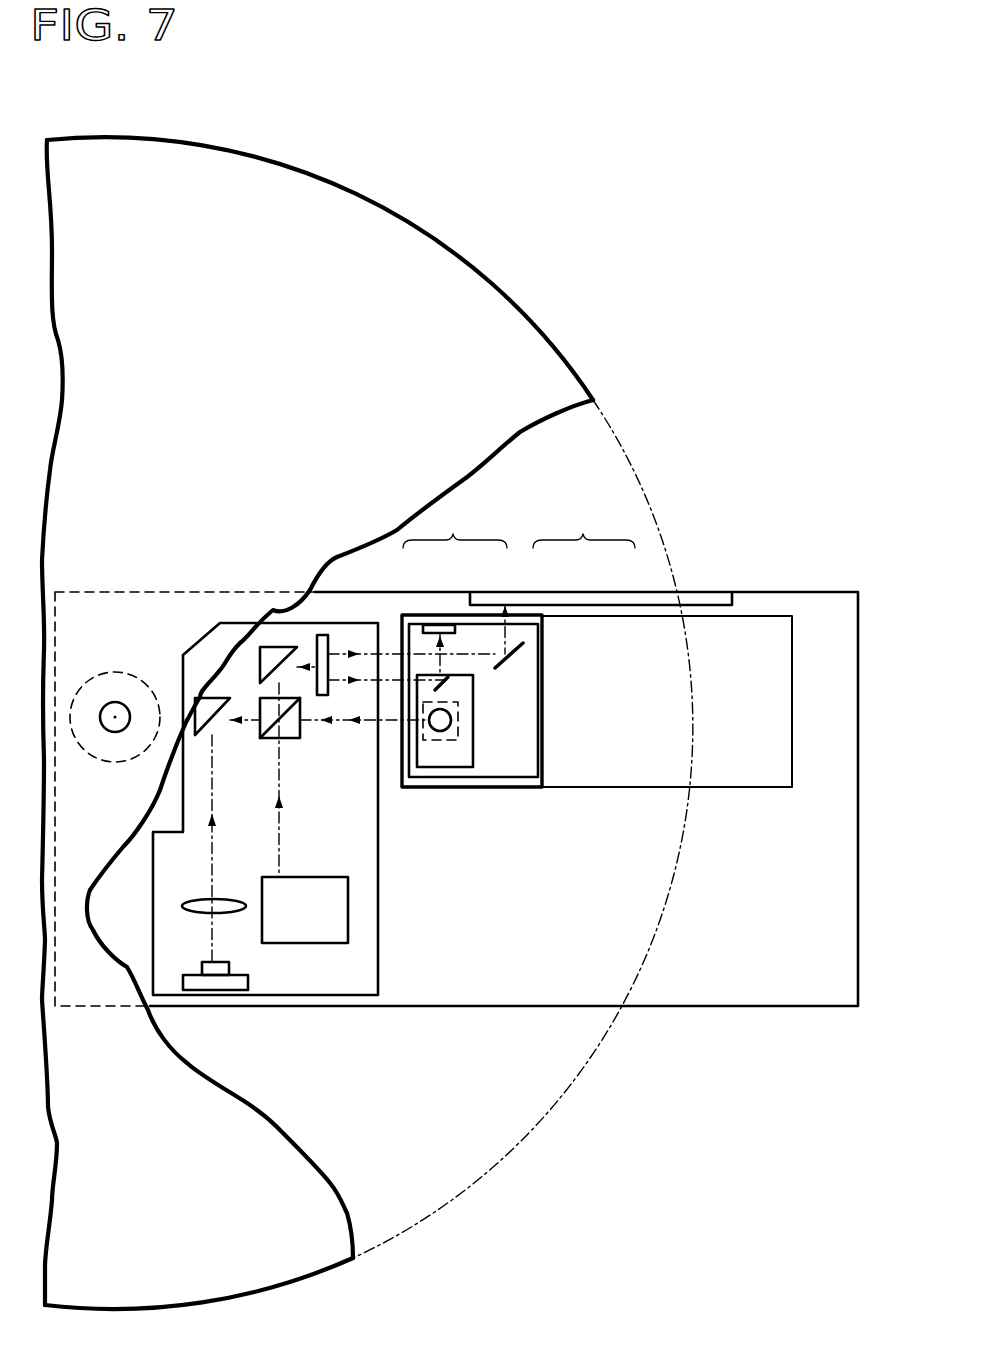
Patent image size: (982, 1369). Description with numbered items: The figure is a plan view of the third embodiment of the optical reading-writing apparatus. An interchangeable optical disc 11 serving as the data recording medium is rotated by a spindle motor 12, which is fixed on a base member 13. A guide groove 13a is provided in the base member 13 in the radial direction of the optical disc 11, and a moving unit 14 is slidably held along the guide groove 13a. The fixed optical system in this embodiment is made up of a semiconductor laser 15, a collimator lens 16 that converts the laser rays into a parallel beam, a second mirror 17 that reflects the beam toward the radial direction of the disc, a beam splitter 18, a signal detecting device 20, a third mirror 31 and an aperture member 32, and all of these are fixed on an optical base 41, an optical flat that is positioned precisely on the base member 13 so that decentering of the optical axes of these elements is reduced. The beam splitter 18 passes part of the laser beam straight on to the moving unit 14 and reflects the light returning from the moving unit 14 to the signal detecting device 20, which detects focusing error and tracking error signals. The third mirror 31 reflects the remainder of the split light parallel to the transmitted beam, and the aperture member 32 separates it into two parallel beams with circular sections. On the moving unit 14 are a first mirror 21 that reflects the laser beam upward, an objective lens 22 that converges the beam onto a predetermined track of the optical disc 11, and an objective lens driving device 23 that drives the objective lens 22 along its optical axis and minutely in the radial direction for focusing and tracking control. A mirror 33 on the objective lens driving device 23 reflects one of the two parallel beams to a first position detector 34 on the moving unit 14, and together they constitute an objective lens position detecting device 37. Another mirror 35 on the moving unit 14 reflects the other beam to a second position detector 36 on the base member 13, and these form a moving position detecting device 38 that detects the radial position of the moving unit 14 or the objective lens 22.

The optical disc 11 is at (511, 318).
The spindle motor 12 is at (112, 673).
The base member 13 is at (827, 603).
The guide groove 13a is at (758, 623).
The moving unit 14 is at (522, 767).
The semiconductor laser 15 is at (210, 983).
The collimator lens 16 is at (233, 914).
The second mirror 17 is at (208, 697).
The beam splitter 18 is at (259, 700).
The signal detecting device 20 is at (315, 941).
The first mirror 21 is at (445, 730).
The objective lens 22 is at (432, 732).
The objective lens driving device 23 is at (462, 753).
The third mirror 31 is at (277, 646).
The aperture member 32 is at (323, 634).
The mirror 33 is at (453, 682).
The first position detector 34 is at (437, 622).
The mirror 35 is at (523, 657).
The second position detector 36 is at (608, 598).
The objective lens position detecting device 37 is at (455, 589).
The moving position detecting device 38 is at (568, 578).
The optical base 41 is at (367, 965).